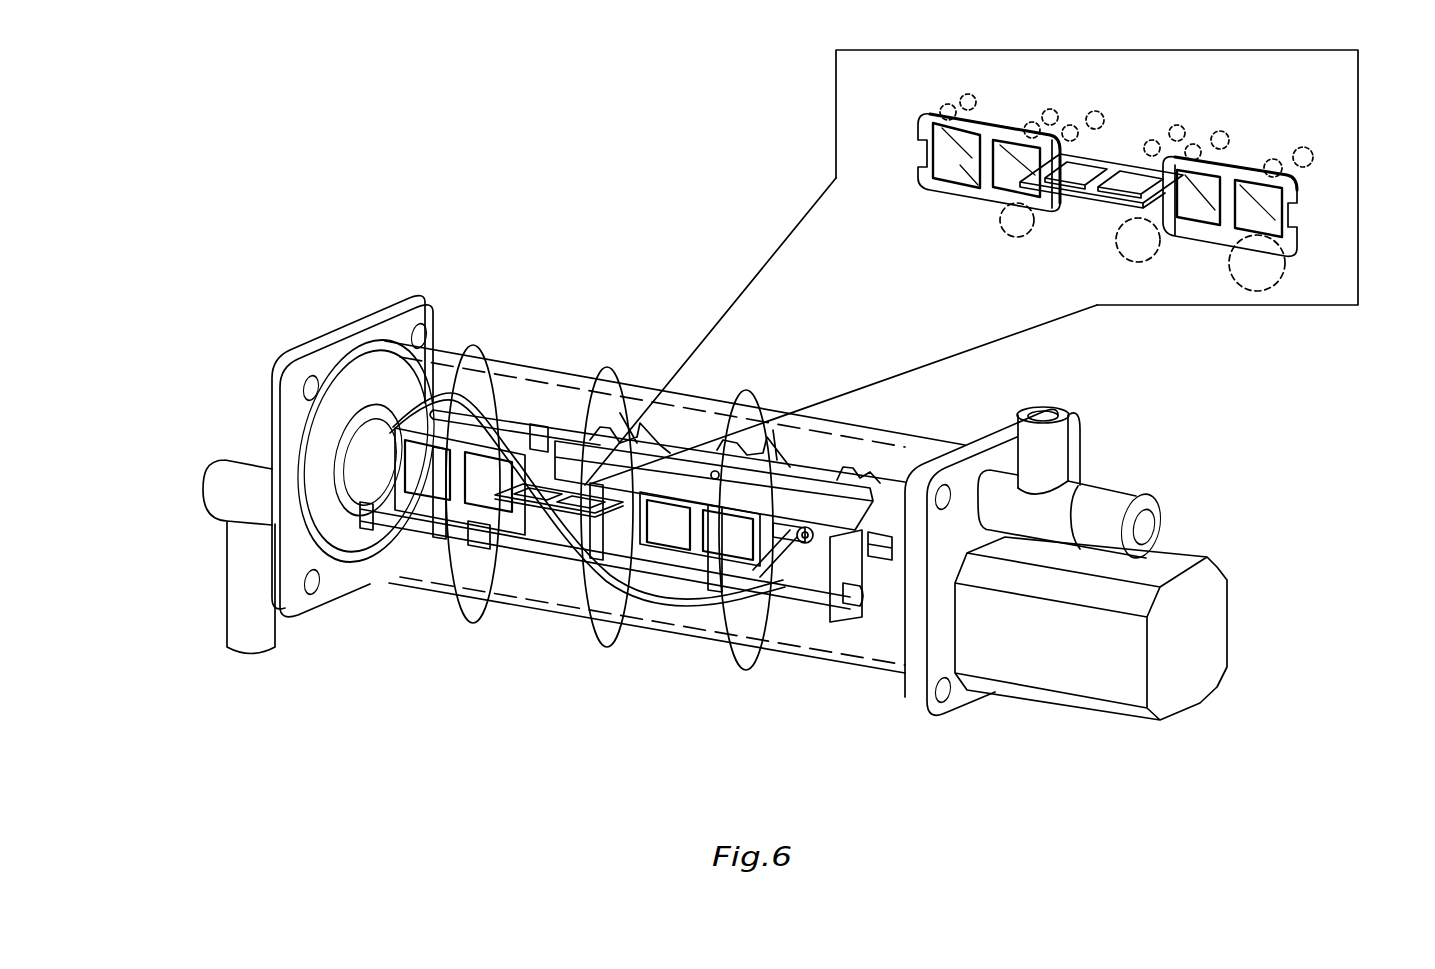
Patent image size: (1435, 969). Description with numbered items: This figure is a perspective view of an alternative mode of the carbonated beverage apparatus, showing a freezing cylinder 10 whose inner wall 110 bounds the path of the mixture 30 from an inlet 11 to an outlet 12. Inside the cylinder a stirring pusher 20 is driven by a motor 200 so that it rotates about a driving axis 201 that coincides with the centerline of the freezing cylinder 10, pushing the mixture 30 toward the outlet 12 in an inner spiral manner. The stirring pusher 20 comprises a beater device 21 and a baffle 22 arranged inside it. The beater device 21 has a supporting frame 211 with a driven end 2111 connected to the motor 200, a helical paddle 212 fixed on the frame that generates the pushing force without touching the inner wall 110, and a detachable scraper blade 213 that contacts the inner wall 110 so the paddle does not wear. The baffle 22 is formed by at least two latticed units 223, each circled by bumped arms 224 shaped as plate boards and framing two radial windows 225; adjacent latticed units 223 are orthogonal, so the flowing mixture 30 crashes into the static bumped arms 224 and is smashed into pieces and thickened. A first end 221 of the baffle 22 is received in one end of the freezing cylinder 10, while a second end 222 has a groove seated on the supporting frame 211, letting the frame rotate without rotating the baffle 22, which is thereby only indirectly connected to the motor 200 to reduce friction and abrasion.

The freezing cylinder 10 is at (697, 324).
The inner wall 110 is at (697, 405).
The inlet 11 is at (1042, 373).
The outlet 12 is at (255, 593).
The stirring pusher 20 is at (497, 355).
The beater device 21 is at (447, 528).
The baffle 22 is at (482, 510).
The first end 221 is at (913, 153).
The second end 222 is at (1297, 218).
The latticed unit 223 is at (957, 163).
The bumped arm 224 is at (1180, 165).
The radial window 225 is at (1247, 195).
The supporting frame 211 is at (638, 555).
The driven end 2111 is at (880, 527).
The helical paddle 212 is at (655, 563).
The scraper blade 213 is at (727, 497).
The driving axis 201 is at (893, 553).
The mixture 30 is at (855, 628).
The motor 200 is at (1060, 657).